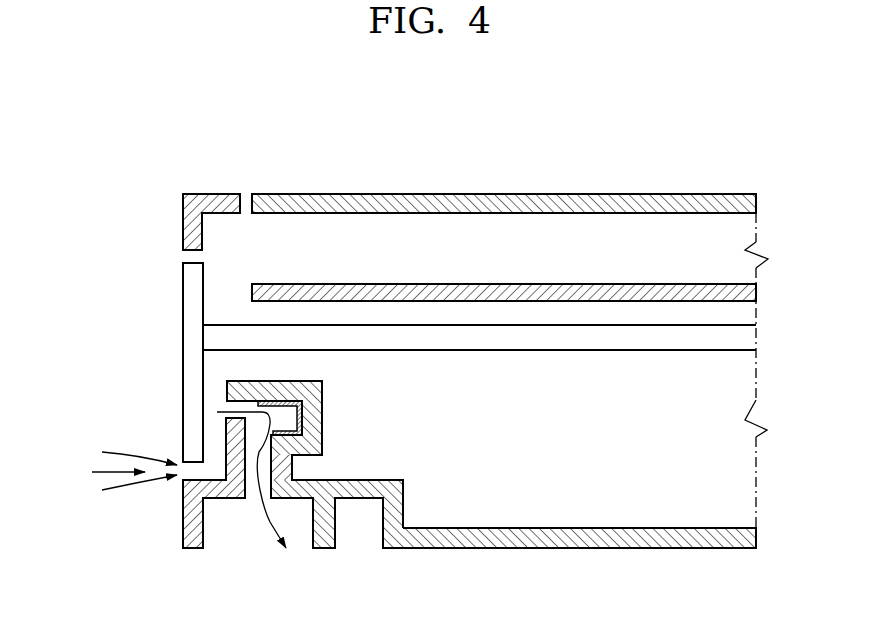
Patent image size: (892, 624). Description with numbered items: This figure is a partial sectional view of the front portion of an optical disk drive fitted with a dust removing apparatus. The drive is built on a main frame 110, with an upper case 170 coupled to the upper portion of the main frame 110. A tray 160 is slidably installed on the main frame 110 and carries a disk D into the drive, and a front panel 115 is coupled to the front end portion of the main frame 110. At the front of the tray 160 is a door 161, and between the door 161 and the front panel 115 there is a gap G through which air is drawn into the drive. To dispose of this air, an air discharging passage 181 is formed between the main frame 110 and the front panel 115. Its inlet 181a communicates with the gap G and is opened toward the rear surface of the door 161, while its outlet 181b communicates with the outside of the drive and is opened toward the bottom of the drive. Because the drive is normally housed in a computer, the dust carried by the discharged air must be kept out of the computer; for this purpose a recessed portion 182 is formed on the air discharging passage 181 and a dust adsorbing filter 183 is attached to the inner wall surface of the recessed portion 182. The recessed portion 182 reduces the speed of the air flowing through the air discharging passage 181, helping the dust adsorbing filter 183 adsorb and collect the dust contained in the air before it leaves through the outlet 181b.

The main frame 110 is at (522, 538).
The front panel 115 is at (183, 520).
The tray 160 is at (603, 337).
The door 161 is at (196, 322).
The upper case 170 is at (423, 194).
The air discharging passage 181 is at (252, 473).
The inlet 181a is at (235, 406).
The outlet 181b is at (273, 507).
The recessed portion 182 is at (282, 417).
The dust adsorbing filter 183 is at (303, 420).
The disk D is at (508, 284).
The gap G is at (197, 468).